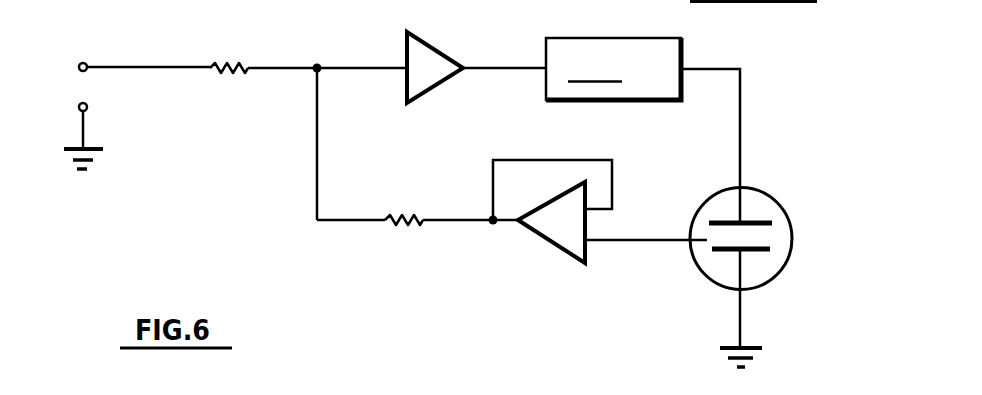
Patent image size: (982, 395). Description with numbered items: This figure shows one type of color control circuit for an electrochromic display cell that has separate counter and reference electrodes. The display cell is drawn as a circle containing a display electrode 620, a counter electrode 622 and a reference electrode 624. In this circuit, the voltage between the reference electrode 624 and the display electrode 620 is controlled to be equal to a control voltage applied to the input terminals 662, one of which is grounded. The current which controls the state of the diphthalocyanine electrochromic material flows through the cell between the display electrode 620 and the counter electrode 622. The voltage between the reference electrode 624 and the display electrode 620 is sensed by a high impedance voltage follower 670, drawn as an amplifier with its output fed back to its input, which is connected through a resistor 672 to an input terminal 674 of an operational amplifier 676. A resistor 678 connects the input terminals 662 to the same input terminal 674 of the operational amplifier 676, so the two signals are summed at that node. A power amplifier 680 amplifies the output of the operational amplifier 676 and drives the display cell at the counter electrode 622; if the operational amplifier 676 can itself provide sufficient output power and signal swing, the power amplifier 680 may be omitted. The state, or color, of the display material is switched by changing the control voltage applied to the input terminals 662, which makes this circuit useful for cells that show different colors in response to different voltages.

The input terminals 662 is at (136, 116).
The resistor 678 is at (218, 69).
The input terminal 674 is at (348, 65).
The operational amplifier 676 is at (429, 40).
The power amplifier 680 is at (643, 130).
The resistor 672 is at (400, 215).
The high impedance voltage follower 670 is at (547, 230).
The reference electrode 624 is at (703, 242).
The counter electrode 622 is at (772, 221).
The display electrode 620 is at (772, 250).